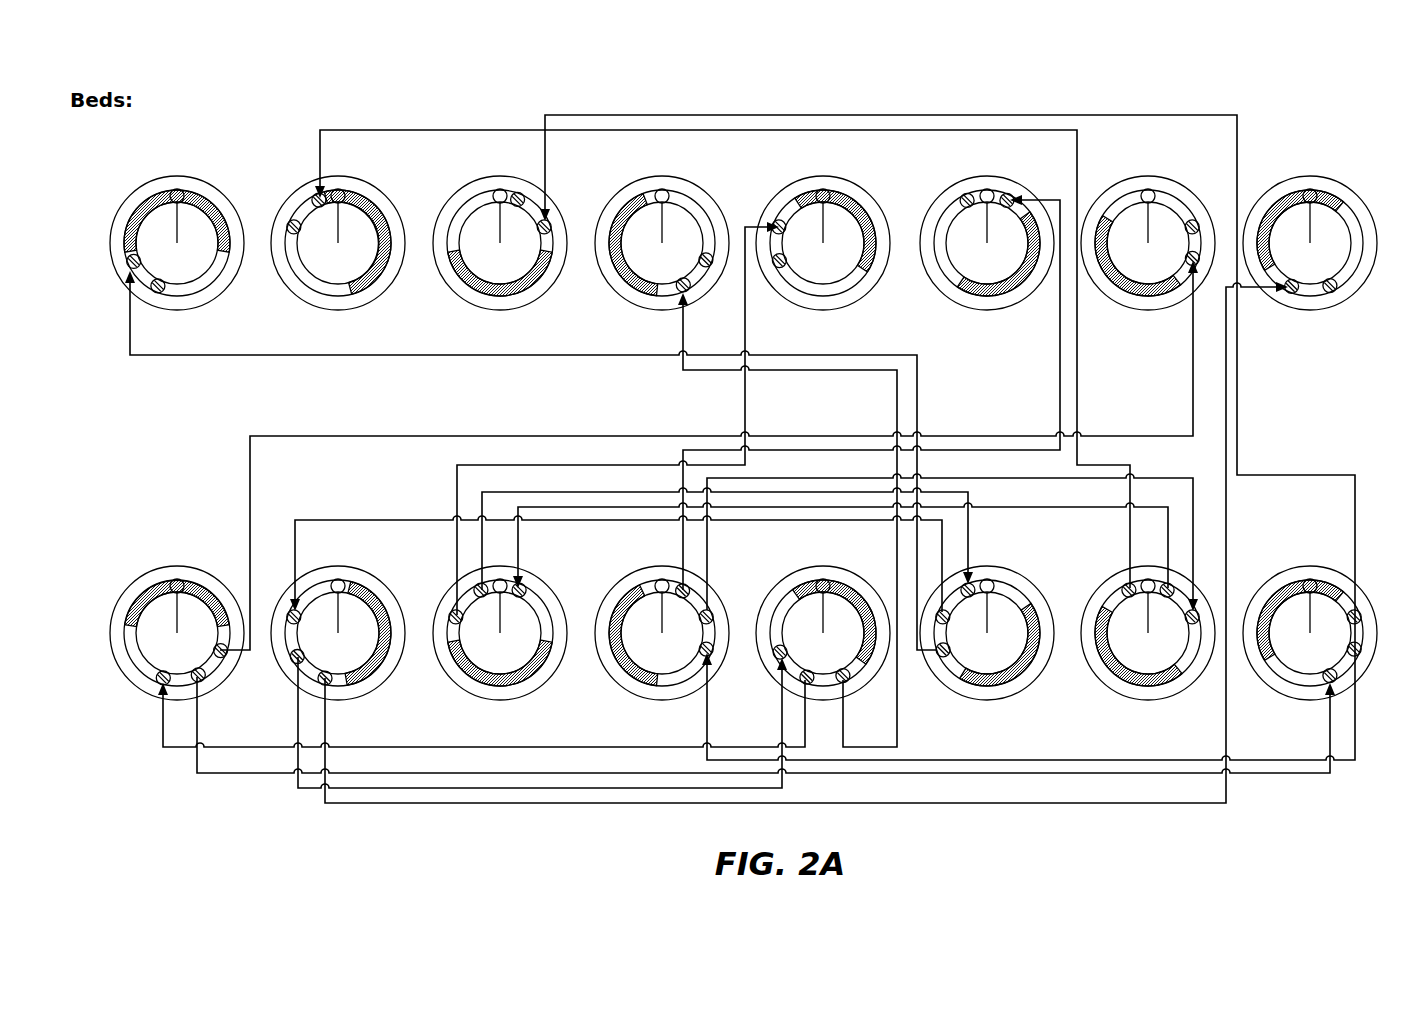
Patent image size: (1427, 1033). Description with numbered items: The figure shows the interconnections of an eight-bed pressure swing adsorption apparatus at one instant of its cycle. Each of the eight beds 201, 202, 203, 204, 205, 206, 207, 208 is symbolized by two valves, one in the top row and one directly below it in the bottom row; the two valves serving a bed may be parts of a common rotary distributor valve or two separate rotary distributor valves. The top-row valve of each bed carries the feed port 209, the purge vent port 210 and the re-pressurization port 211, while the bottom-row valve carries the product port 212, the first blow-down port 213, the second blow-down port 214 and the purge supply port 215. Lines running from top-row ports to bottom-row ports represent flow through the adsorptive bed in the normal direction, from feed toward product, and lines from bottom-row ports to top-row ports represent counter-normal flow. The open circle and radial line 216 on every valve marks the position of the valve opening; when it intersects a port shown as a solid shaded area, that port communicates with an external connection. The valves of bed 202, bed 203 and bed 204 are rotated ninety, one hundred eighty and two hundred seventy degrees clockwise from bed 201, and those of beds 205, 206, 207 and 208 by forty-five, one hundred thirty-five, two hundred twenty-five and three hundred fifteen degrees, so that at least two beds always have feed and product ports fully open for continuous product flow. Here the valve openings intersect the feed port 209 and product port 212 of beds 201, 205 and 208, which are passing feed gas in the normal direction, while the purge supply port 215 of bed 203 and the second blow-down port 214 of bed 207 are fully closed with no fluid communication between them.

The bed 201 is at (177, 394).
The bed 202 is at (338, 394).
The bed 203 is at (500, 394).
The bed 204 is at (662, 394).
The bed 205 is at (823, 394).
The bed 206 is at (987, 394).
The bed 207 is at (1148, 394).
The bed 208 is at (1310, 394).
The feed port 209 is at (140, 205).
The purge vent port 210 is at (160, 295).
The re-pressurization port 211 is at (128, 268).
The product port 212 is at (140, 595).
The first blow-down port 213 is at (225, 655).
The second blow-down port 214 is at (200, 682).
The purge supply port 215 is at (160, 685).
The valve opening 216 is at (177, 190).